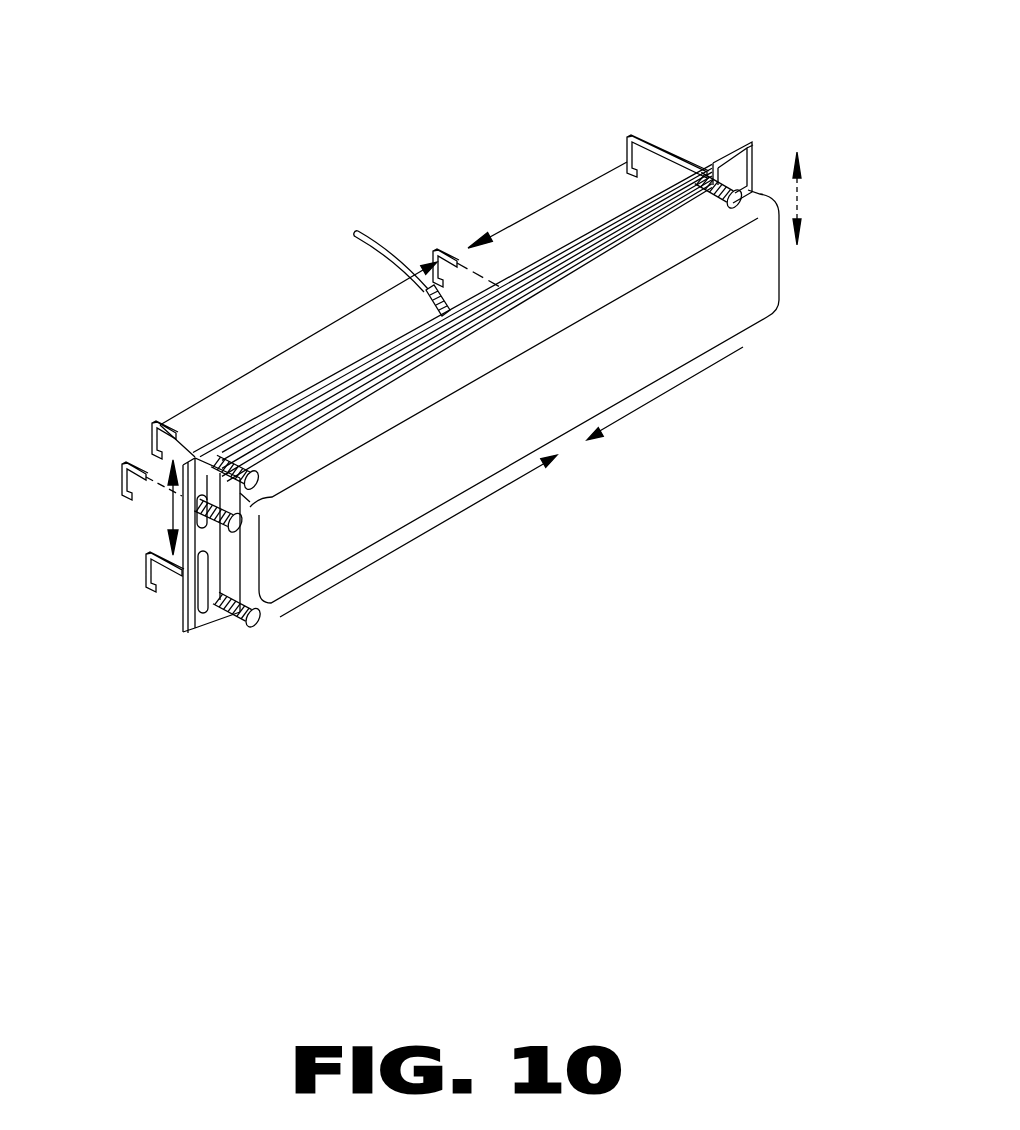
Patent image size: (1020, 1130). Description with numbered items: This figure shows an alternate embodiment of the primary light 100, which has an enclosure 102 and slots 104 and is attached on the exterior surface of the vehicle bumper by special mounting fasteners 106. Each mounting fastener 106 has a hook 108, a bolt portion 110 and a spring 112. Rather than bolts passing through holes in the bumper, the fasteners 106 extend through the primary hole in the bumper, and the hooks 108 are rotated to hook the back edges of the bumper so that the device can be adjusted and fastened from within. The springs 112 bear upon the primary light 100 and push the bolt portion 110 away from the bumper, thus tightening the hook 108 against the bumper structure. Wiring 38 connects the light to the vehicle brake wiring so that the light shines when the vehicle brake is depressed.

The wiring 38 is at (362, 228).
The primary light 100 is at (372, 358).
The enclosure 102 is at (687, 313).
The slots 104 is at (282, 430).
The mounting fasteners 106 is at (679, 118).
The hook 108 is at (626, 141).
The bolt portion 110 is at (755, 195).
The spring 112 is at (722, 140).